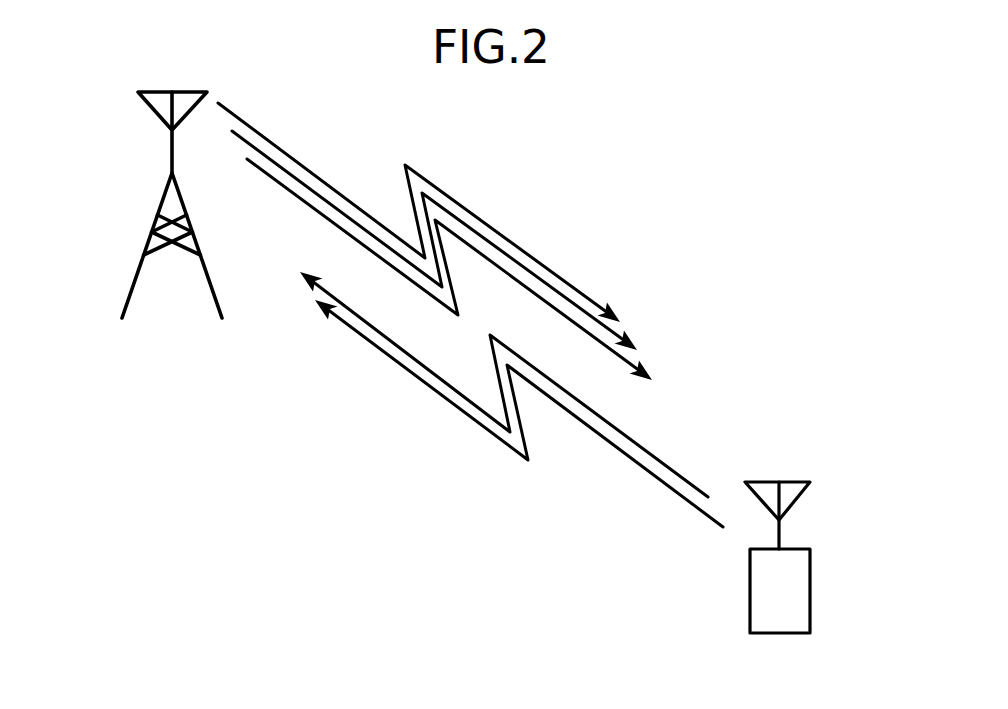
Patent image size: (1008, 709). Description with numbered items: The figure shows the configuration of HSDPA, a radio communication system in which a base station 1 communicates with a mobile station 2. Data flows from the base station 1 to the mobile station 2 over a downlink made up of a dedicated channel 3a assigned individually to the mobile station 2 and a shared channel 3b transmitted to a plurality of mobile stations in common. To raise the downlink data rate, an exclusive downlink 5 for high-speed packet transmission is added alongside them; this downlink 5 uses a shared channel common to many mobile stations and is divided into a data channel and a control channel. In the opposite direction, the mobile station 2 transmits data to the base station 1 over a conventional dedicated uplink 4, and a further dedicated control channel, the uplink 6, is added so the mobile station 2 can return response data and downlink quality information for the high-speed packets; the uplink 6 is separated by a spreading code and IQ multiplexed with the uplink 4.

The base station 1 is at (132, 283).
The mobile station 2 is at (810, 594).
The dedicated channel 3a is at (503, 265).
The shared channel 3b is at (438, 186).
The uplink 4 is at (642, 445).
The exclusive downlink 5 is at (470, 222).
The uplink 6 is at (482, 428).